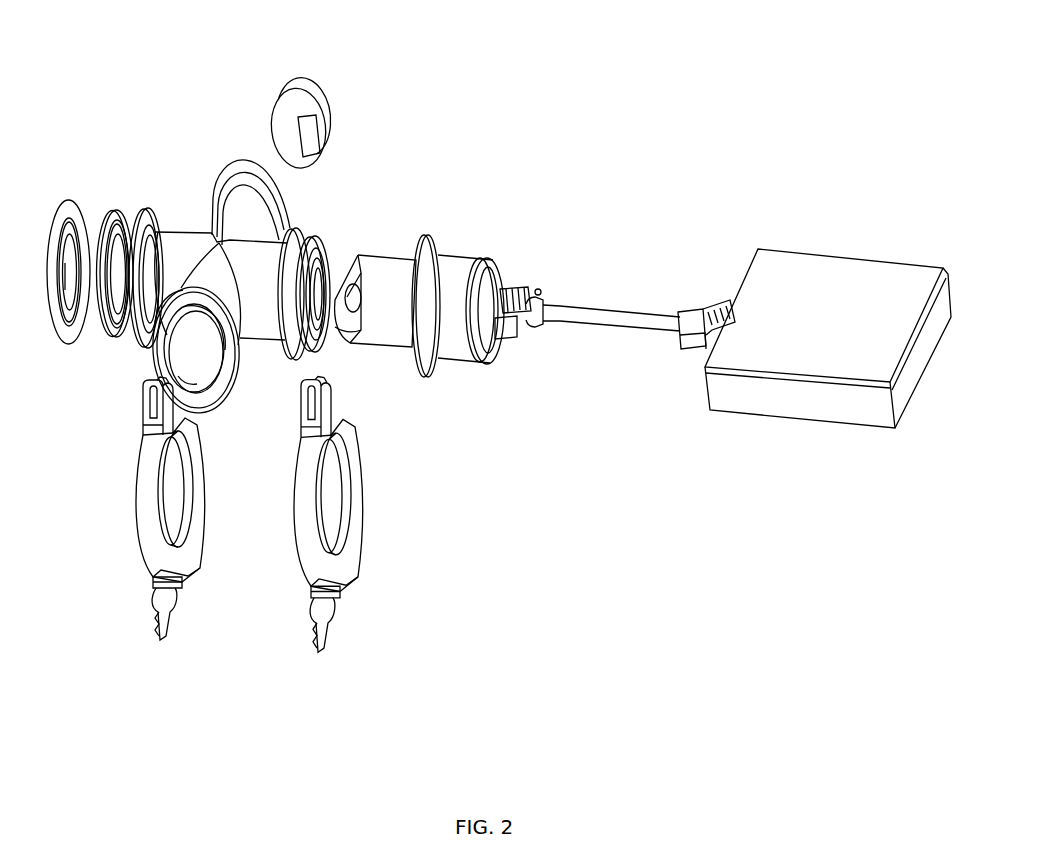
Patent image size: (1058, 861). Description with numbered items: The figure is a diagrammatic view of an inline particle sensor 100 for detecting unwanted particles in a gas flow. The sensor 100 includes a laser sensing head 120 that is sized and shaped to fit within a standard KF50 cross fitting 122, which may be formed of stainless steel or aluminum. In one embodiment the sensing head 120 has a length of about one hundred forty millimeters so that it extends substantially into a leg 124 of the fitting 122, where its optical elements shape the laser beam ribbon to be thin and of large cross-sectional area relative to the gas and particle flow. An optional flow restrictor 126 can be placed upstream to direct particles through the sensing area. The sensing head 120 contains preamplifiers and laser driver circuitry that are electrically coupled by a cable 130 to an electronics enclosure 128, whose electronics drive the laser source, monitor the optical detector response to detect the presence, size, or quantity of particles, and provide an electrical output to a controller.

The sensor 100 is at (469, 248).
The laser sensing head 120 is at (460, 358).
The cross fitting 122 is at (162, 358).
The leg 124 is at (190, 233).
The flow restrictor 126 is at (317, 80).
The electronics enclosure 128 is at (770, 238).
The cable 130 is at (571, 310).